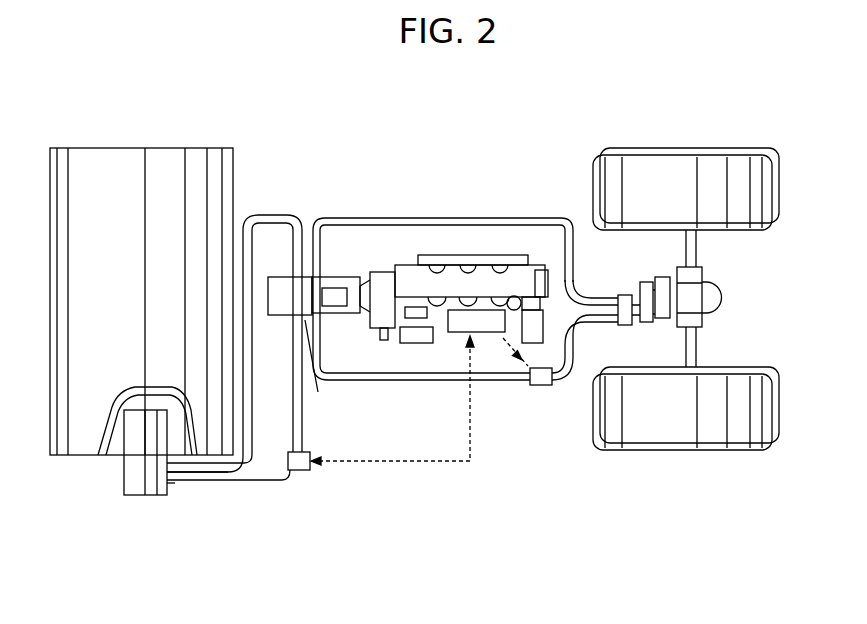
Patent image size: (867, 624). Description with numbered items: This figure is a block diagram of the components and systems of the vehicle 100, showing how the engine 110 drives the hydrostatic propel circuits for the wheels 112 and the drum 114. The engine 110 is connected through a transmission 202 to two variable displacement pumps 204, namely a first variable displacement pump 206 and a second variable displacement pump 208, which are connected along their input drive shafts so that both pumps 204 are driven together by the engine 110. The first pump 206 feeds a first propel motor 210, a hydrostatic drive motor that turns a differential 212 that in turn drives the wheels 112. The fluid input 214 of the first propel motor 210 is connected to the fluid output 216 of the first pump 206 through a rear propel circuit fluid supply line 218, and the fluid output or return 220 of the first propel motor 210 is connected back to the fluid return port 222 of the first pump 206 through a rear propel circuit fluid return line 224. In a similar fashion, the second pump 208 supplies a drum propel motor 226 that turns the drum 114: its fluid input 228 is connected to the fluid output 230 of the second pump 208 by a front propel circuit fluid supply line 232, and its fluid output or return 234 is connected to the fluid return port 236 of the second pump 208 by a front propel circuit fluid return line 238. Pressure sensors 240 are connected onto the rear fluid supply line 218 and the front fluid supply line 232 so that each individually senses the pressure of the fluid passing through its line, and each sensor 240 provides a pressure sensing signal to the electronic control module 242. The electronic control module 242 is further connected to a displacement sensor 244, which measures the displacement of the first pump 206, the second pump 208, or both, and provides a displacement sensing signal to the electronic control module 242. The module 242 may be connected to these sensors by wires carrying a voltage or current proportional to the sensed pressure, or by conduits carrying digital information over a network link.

The vehicle 100 is at (200, 68).
The drum 114 is at (120, 167).
The wheels 112 is at (670, 168).
The engine 110 is at (445, 258).
The rear propel circuit fluid return line 224 is at (507, 214).
The displacement sensor 244 is at (335, 296).
The fluid return port 222 is at (323, 277).
The transmission 202 is at (362, 276).
The fluid return port 236 is at (285, 274).
The variable displacement pumps 204 is at (290, 296).
The second variable displacement pump 208 is at (276, 318).
The front propel circuit fluid return line 238 is at (254, 436).
The fluid output 230 is at (327, 368).
The fluid output 216 is at (322, 315).
The first variable displacement pump 206 is at (333, 313).
The rear propel circuit fluid supply line 218 is at (500, 345).
The electronic control module (ECM) 242 is at (485, 385).
The pressure sensors 240 is at (310, 468).
The fluid output or return 220 is at (620, 306).
The first propel motor 210 is at (643, 283).
The differential 212 is at (717, 300).
The fluid input 214 is at (612, 323).
The drum propel motor 226 is at (138, 477).
The fluid input 228 is at (170, 486).
The fluid output or return 234 is at (180, 470).
The front propel circuit fluid supply line 232 is at (258, 489).